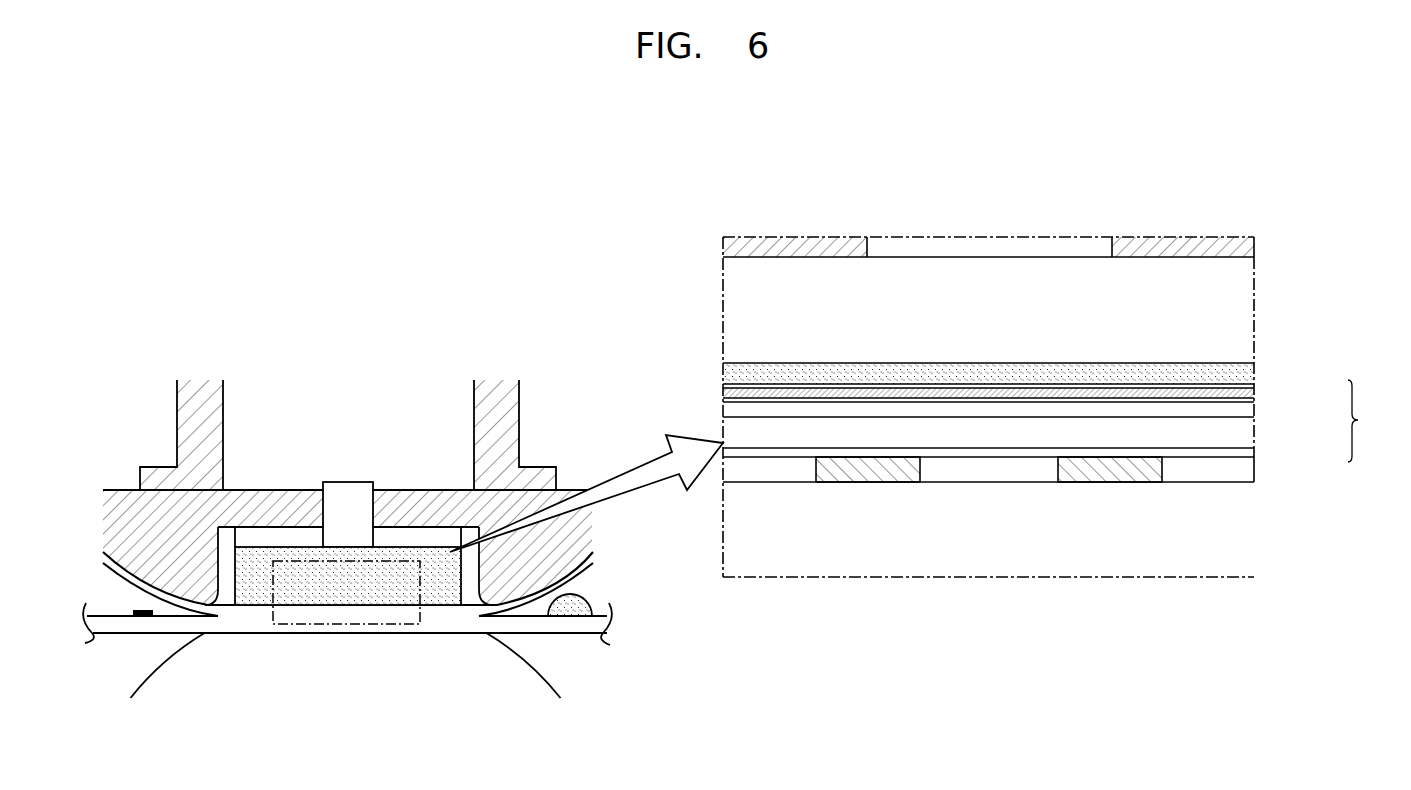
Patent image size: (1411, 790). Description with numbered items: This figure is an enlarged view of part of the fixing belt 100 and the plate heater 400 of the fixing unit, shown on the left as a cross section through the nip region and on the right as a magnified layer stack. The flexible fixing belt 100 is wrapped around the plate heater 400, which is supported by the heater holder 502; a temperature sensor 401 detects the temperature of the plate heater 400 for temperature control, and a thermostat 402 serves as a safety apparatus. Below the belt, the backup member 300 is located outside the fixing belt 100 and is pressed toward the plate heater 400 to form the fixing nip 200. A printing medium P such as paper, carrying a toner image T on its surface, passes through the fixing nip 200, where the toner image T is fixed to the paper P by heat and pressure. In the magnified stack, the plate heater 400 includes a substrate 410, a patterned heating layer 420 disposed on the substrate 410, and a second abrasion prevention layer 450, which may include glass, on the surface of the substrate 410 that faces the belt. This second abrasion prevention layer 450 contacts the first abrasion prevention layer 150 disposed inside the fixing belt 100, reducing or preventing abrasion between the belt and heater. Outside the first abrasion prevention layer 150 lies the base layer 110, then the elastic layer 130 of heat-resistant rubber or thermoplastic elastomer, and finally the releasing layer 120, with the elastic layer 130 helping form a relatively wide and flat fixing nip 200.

The fixing belt 100 is at (1373, 421).
The base layer 110 is at (1247, 408).
The releasing layer 120 is at (1247, 455).
The elastic layer 130 is at (1247, 432).
The first abrasion prevention layer 150 is at (1247, 393).
The fixing nip 200 is at (348, 640).
The backup member 300 is at (525, 665).
The plate heater 400 is at (245, 578).
The temperature sensor 401 is at (242, 538).
The thermostat 402 is at (347, 488).
The substrate 410 is at (1243, 305).
The heating layer 420 is at (1247, 248).
The second abrasion prevention layer 450 is at (1243, 373).
The heater holder 502 is at (577, 524).
The printing medium P is at (600, 622).
The toner image T is at (593, 603).